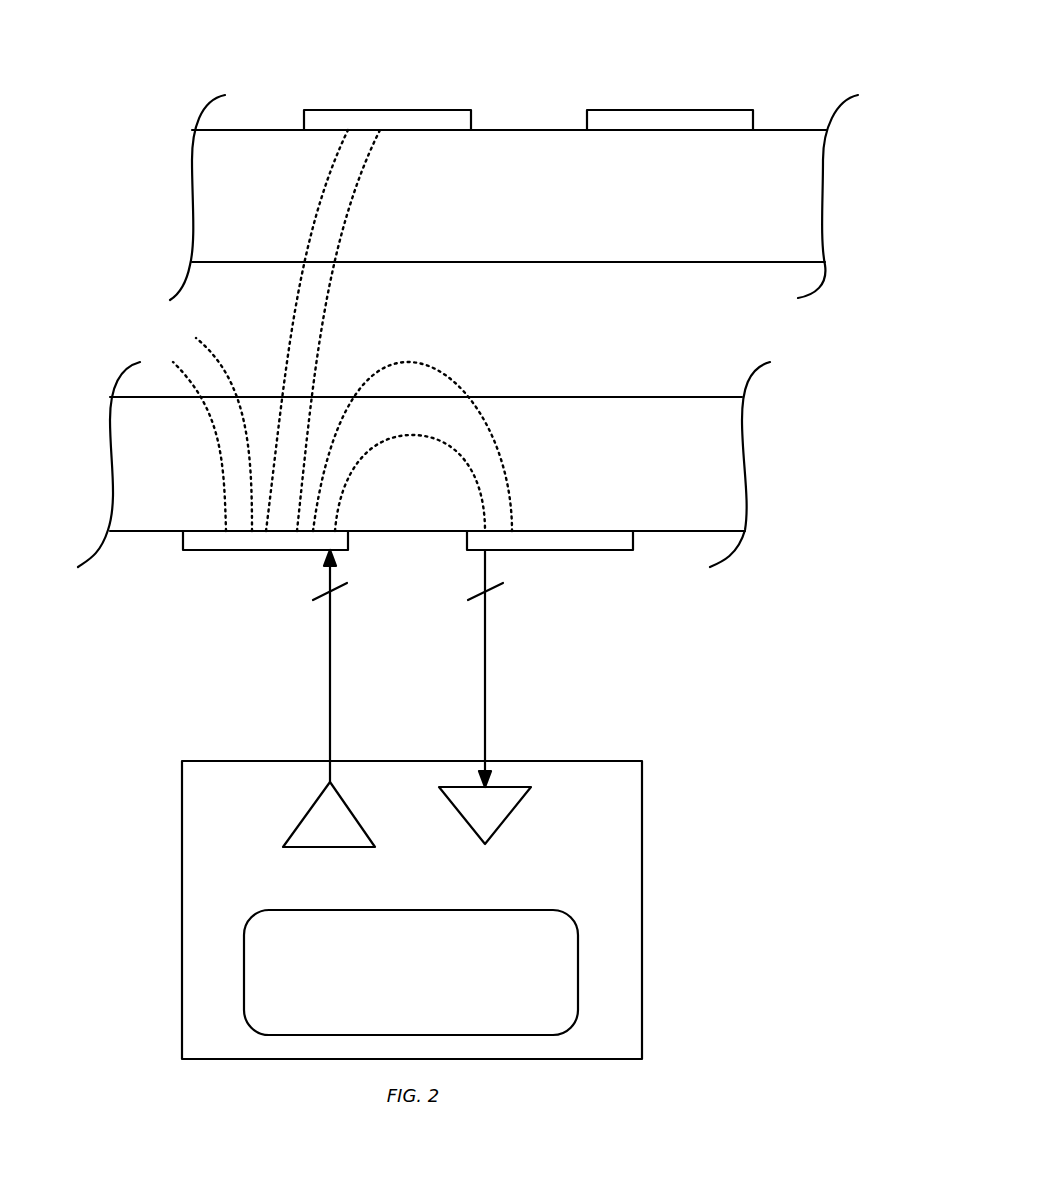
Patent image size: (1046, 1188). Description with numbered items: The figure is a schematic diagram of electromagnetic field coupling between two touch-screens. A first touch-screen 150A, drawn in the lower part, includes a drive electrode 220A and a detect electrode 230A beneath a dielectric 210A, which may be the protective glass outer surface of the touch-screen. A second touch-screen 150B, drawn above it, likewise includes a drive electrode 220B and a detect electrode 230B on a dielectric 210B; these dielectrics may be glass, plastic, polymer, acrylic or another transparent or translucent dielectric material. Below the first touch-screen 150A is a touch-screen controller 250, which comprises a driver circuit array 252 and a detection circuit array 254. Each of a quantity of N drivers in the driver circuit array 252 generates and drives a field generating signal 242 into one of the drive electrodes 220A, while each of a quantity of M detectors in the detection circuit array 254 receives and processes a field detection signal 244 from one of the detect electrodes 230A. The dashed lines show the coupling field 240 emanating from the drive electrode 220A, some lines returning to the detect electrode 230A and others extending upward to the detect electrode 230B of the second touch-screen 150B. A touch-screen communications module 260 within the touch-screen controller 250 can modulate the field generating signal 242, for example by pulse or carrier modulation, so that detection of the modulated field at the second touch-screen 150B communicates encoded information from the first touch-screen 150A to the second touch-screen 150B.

The second touch-screen 150B is at (476, 153).
The first touch-screen 150A is at (461, 389).
The dielectric 210B is at (642, 220).
The dielectric 210A is at (607, 485).
The detect electrode 230B is at (330, 111).
The drive electrode 220B is at (670, 68).
The drive electrode 220A is at (268, 551).
The detect electrode 230A is at (548, 551).
The coupling field 240 is at (347, 353).
The field generating signal 242 is at (330, 705).
The field detection signal 244 is at (485, 705).
The touch-screen controller 250 is at (581, 890).
The driver circuit array 252 is at (280, 810).
The detection circuit array 254 is at (538, 818).
The touch-screen communications module 260 is at (396, 1005).